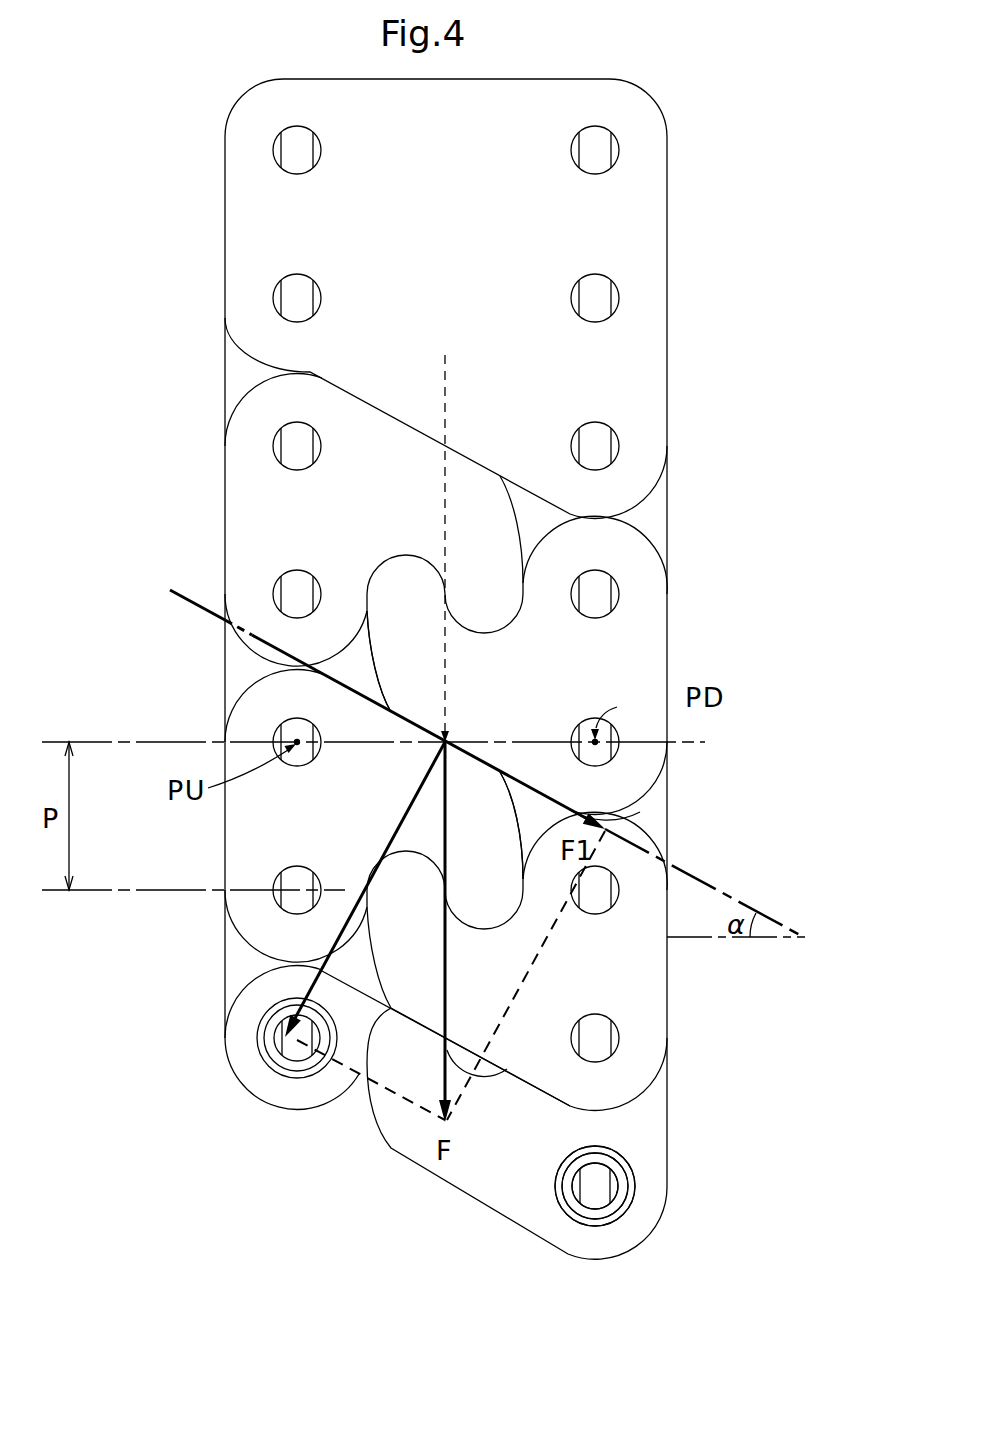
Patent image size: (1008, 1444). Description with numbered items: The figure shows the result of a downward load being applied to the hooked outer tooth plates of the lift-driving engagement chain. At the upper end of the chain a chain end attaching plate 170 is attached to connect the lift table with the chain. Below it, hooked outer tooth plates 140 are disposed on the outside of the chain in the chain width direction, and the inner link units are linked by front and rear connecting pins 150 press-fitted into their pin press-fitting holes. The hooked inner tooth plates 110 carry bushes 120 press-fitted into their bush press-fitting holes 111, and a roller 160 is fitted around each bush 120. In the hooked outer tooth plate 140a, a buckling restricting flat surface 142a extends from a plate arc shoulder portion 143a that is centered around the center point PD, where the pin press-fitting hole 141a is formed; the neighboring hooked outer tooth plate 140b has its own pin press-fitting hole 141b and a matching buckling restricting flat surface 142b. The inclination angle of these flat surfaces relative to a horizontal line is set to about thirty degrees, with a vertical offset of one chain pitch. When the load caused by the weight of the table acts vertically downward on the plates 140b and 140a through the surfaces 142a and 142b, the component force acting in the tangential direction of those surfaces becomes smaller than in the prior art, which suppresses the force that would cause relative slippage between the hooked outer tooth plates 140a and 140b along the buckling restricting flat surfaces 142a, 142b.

The hooked inner tooth plate 110 is at (256, 1036).
The bush press-fitting hole 111 is at (597, 1222).
The bush 120 is at (566, 1213).
The hooked outer tooth plate 140 is at (250, 508).
The hooked outer tooth plate 140a is at (635, 634).
The hooked outer tooth plate 140b is at (250, 858).
The pin press-fitting hole 141a is at (616, 760).
The pin press-fitting hole 141b is at (277, 728).
The buckling restricting flat surface 142a is at (473, 757).
The buckling restricting flat surface 142b is at (369, 686).
The plate arc shoulder portion 143a is at (640, 797).
The connecting pin 150 is at (610, 1036).
The roller 160 is at (621, 1160).
The chain end attaching plate 170 is at (637, 295).